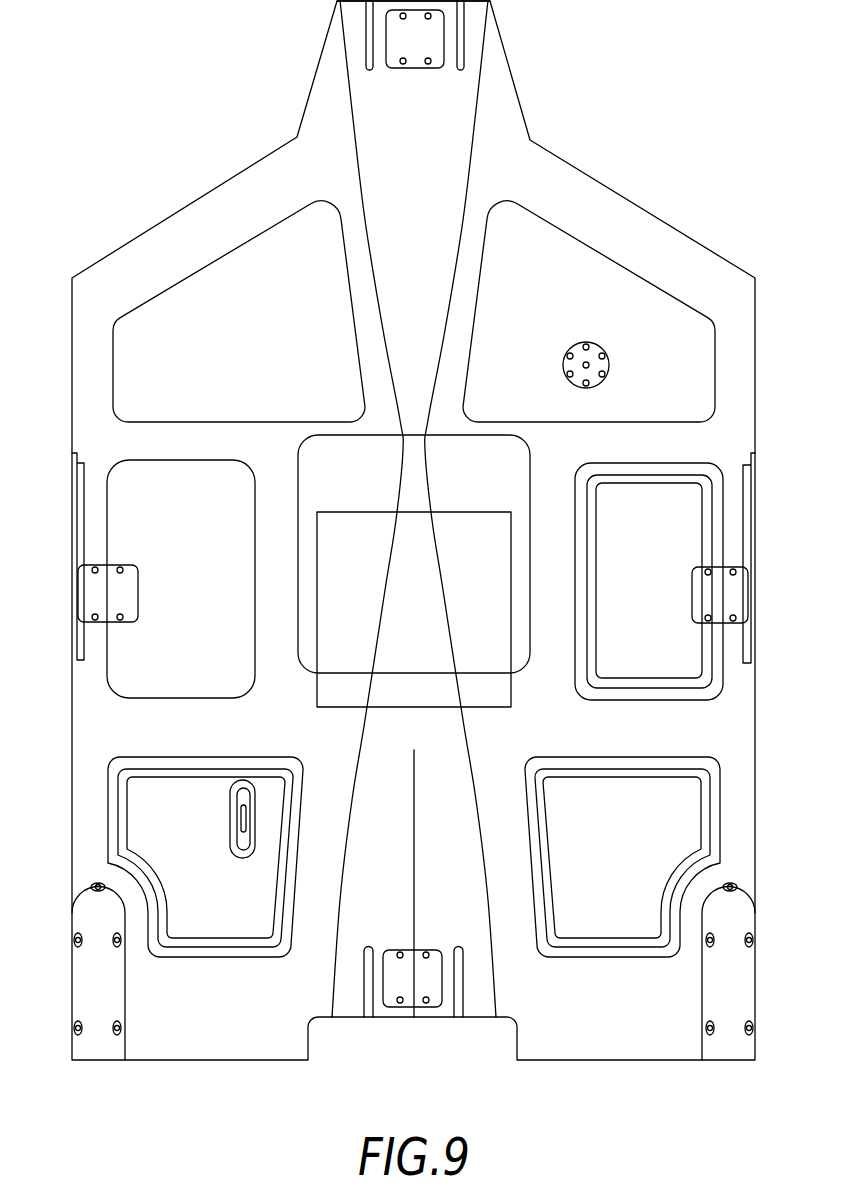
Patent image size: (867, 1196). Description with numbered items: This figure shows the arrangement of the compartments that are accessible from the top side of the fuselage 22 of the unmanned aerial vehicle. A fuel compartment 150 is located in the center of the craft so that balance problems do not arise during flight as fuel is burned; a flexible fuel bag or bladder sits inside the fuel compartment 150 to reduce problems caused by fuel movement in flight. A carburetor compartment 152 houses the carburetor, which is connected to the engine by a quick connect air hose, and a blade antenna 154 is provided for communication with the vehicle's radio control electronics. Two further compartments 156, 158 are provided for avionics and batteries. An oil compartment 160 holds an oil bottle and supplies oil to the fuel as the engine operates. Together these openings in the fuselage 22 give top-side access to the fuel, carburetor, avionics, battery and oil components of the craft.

The fuselage 22 is at (548, 150).
The fuel compartment 150 is at (298, 462).
The carburetor compartment 152 is at (163, 756).
The blade antenna 154 is at (230, 827).
The compartment for avionics and batteries 156 is at (250, 233).
The compartment for avionics and batteries 158 is at (580, 235).
The oil compartment 160 is at (663, 757).